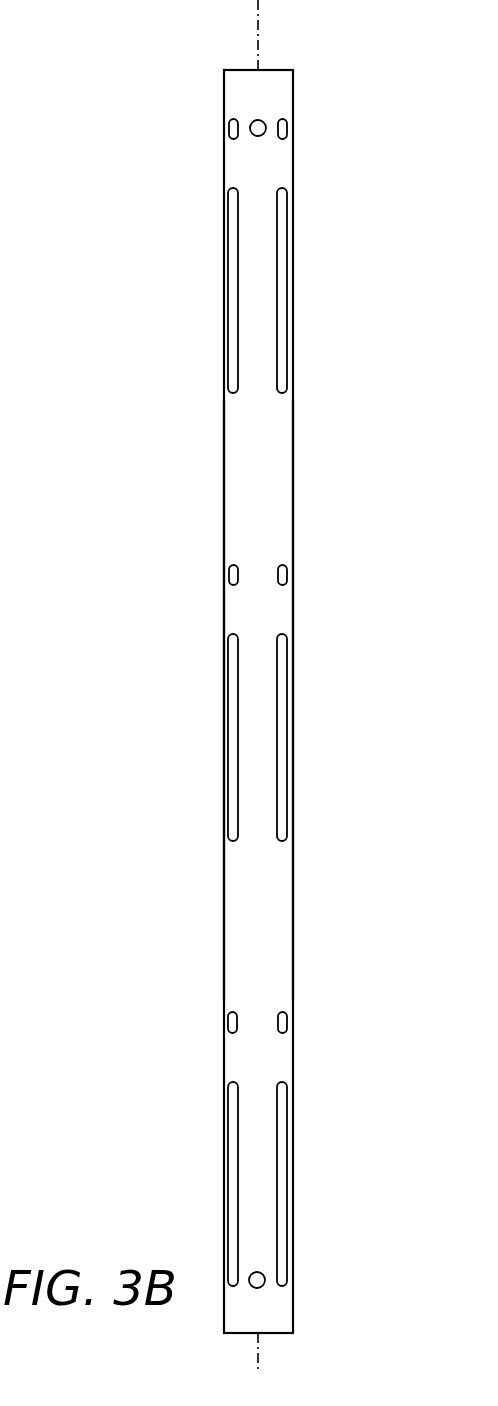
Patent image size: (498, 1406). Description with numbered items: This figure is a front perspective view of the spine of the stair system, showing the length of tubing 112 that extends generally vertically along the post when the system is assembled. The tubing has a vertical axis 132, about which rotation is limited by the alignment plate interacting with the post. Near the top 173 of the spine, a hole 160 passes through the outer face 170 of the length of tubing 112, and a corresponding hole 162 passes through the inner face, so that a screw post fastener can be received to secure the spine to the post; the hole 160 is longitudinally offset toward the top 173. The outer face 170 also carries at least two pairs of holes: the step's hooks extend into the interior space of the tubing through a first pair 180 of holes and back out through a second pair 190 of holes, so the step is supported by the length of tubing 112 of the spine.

The length of tubing 112 is at (224, 165).
The vertical axis 132 is at (256, 34).
The hole 160 is at (265, 121).
The corresponding hole 162 is at (264, 1287).
The outer face 170 is at (245, 469).
The top 173 is at (232, 70).
The first pair of holes 180 is at (236, 1145).
The second pair of holes 190 is at (230, 1020).